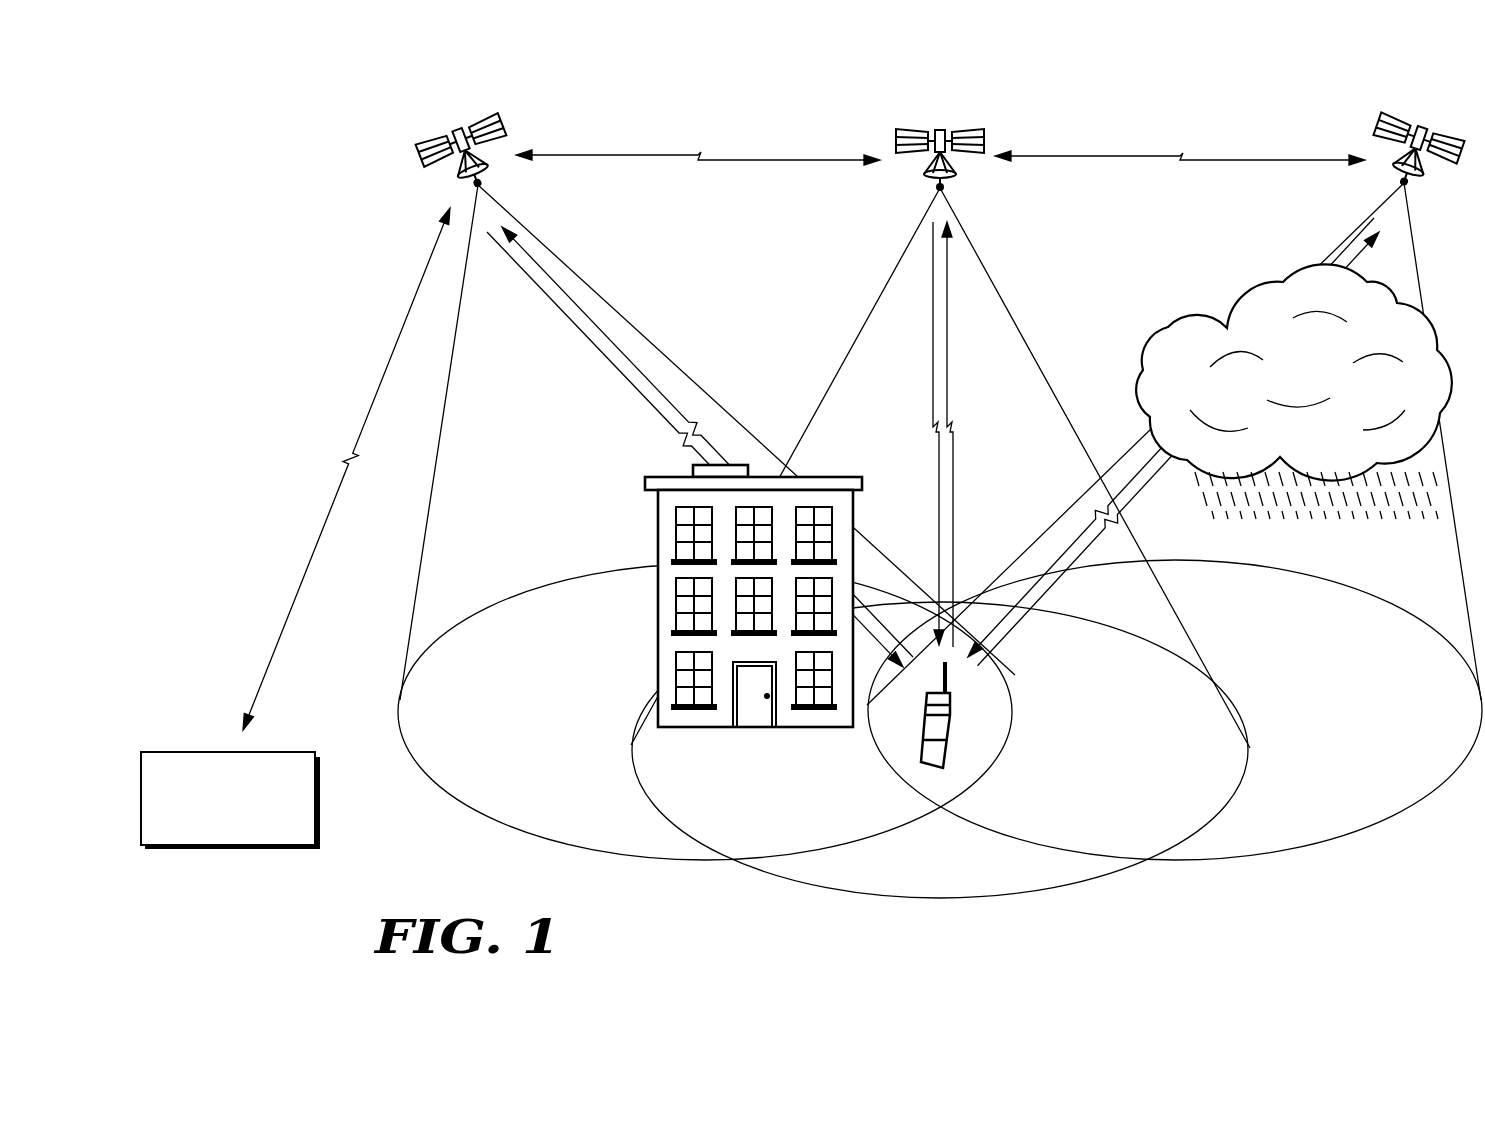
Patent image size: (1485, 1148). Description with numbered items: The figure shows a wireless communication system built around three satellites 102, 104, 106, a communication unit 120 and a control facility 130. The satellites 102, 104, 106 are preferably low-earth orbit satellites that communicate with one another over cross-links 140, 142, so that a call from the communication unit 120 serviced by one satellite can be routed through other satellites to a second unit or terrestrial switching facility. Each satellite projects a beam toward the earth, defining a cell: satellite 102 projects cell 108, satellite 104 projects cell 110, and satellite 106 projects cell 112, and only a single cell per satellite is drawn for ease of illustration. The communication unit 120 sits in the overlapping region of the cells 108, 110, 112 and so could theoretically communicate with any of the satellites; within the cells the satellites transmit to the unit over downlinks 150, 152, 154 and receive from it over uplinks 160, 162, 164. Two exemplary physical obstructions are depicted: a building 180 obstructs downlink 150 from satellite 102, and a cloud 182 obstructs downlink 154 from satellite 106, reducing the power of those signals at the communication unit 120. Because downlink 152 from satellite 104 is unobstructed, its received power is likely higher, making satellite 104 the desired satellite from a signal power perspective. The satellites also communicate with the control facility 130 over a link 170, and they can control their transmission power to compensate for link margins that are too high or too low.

The satellite 102 is at (455, 122).
The satellite 104 is at (942, 120).
The satellite 106 is at (1425, 123).
The cell 108 is at (462, 803).
The cell 110 is at (936, 899).
The cell 112 is at (1395, 816).
The communication unit 120 is at (952, 724).
The control facility 130 is at (214, 849).
The cross-link 140 is at (661, 152).
The cross-link 142 is at (1209, 152).
The downlink 150 is at (560, 310).
The downlink 152 is at (932, 380).
The downlink 154 is at (1000, 625).
The uplink 160 is at (598, 326).
The uplink 162 is at (950, 380).
The uplink 164 is at (1052, 585).
The link 170 is at (374, 398).
The building 180 is at (657, 527).
The cloud 182 is at (1182, 312).